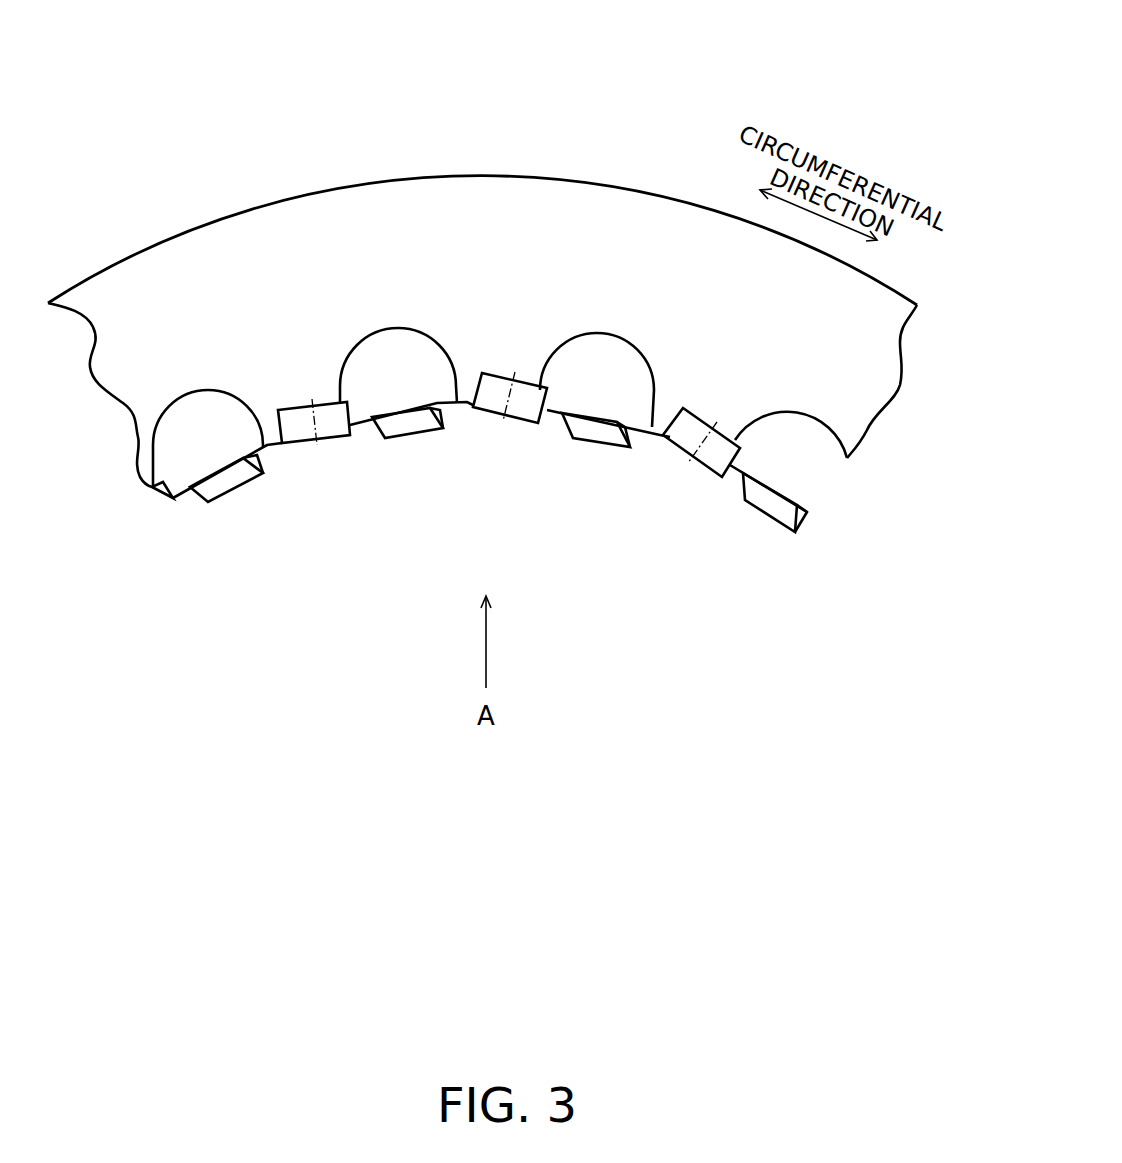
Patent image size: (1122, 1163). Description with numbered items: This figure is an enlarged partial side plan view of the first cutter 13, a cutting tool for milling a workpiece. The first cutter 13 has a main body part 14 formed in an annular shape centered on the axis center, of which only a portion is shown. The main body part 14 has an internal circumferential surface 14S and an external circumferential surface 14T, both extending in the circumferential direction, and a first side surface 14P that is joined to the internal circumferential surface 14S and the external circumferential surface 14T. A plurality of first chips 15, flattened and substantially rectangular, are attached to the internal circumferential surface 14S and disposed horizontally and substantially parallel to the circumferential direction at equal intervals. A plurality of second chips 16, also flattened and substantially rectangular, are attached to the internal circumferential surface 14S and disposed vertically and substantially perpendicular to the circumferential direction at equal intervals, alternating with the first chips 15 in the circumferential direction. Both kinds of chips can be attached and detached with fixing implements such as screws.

The first cutter 13 is at (830, 82).
The main body part 14 is at (168, 237).
The first side surface 14P is at (388, 252).
The external circumferential surface 14T is at (555, 176).
The internal circumferential surface 14S is at (465, 408).
The first chips 15 is at (307, 445).
The second chips 16 is at (230, 493).